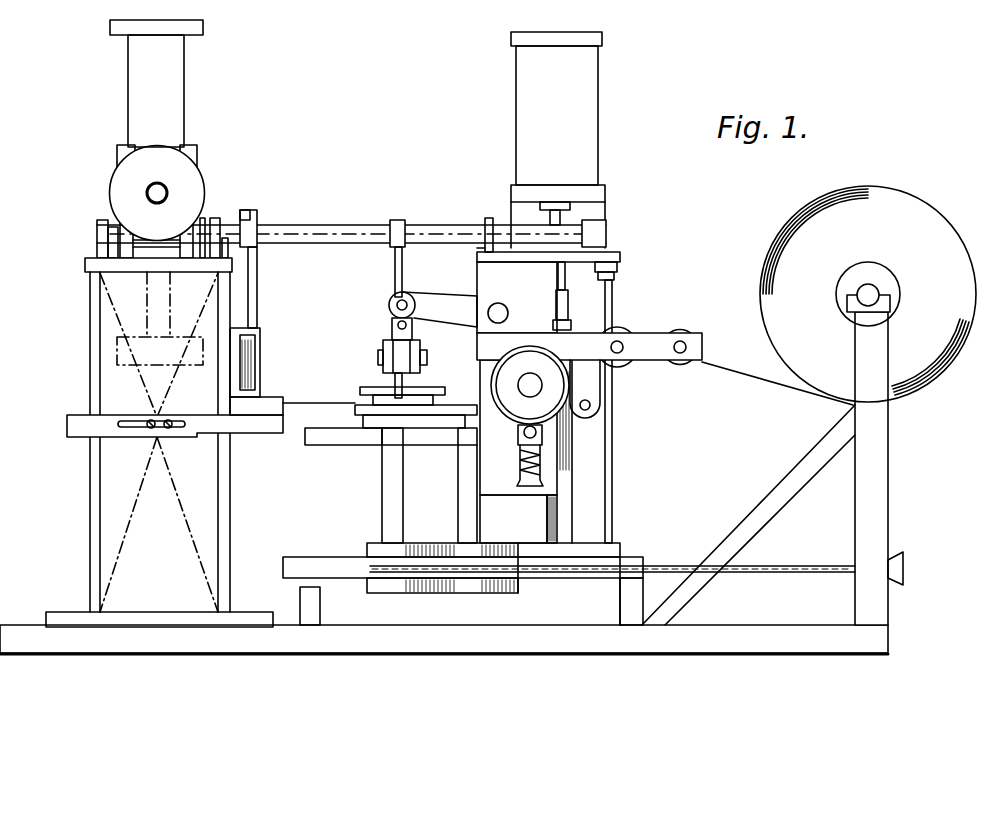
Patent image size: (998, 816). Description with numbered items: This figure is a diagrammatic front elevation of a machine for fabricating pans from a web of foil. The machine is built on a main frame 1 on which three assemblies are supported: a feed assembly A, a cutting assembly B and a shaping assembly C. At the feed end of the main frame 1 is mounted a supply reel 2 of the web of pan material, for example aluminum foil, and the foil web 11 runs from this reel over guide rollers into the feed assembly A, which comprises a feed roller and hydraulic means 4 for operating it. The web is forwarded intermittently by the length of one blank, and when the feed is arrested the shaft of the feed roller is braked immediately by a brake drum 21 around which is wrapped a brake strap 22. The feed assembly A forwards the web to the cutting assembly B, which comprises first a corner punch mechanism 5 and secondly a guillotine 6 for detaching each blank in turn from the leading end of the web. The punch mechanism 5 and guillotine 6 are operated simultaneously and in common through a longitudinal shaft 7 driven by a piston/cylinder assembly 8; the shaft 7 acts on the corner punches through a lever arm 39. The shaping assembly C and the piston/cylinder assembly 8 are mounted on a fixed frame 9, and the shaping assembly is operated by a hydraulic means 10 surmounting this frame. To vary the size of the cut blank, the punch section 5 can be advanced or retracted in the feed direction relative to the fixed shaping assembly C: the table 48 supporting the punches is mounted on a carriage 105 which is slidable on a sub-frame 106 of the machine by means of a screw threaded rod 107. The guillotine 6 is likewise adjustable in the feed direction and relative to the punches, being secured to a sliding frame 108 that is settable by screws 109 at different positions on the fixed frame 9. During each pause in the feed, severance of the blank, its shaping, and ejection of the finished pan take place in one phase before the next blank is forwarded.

The main frame 1 is at (880, 470).
The supply reel 2 is at (780, 258).
The hydraulic means 4 is at (586, 87).
The corner punch mechanism 5 is at (420, 336).
The guillotine 6 is at (263, 355).
The longitudinal shaft 7 is at (365, 232).
The piston/cylinder assembly 8 is at (120, 193).
The fixed frame 9 is at (96, 567).
The hydraulic means 10 is at (130, 84).
The foil web 11 is at (322, 403).
The brake drum 21 is at (518, 402).
The brake strap 22 is at (488, 344).
The lever arm 39 is at (395, 264).
The table 48 is at (448, 416).
The carriage 105 is at (598, 546).
The sub-frame 106 is at (312, 597).
The screw threaded rod 107 is at (816, 567).
The sliding frame 108 is at (67, 423).
The screws 109 is at (149, 420).
The feed assembly A is at (590, 300).
The cutting assembly B is at (323, 284).
The shaping assembly C is at (107, 345).